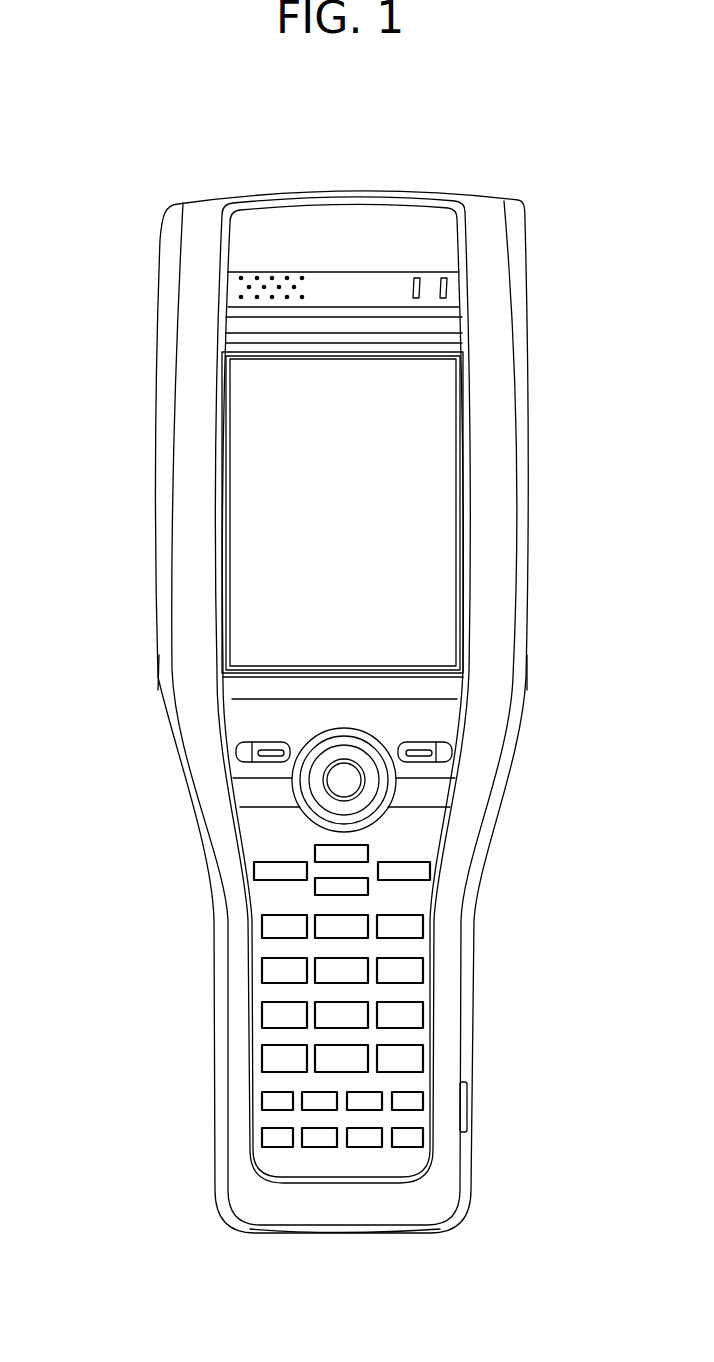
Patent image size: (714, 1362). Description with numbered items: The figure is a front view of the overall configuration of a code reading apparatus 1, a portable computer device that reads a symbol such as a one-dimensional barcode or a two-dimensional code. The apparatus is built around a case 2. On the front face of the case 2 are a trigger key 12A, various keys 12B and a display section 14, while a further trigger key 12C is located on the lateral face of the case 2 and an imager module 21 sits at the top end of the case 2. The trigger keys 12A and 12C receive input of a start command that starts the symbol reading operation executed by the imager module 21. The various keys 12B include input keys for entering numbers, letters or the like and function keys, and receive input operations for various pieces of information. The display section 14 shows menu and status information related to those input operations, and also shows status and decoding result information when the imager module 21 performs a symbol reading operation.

The code reading apparatus 1 is at (533, 168).
The case 2 is at (495, 300).
The imager module 21 is at (348, 190).
The display section 14 is at (387, 508).
The trigger key 12A is at (353, 807).
The various keys 12B is at (185, 853).
The trigger key 12C is at (158, 668).